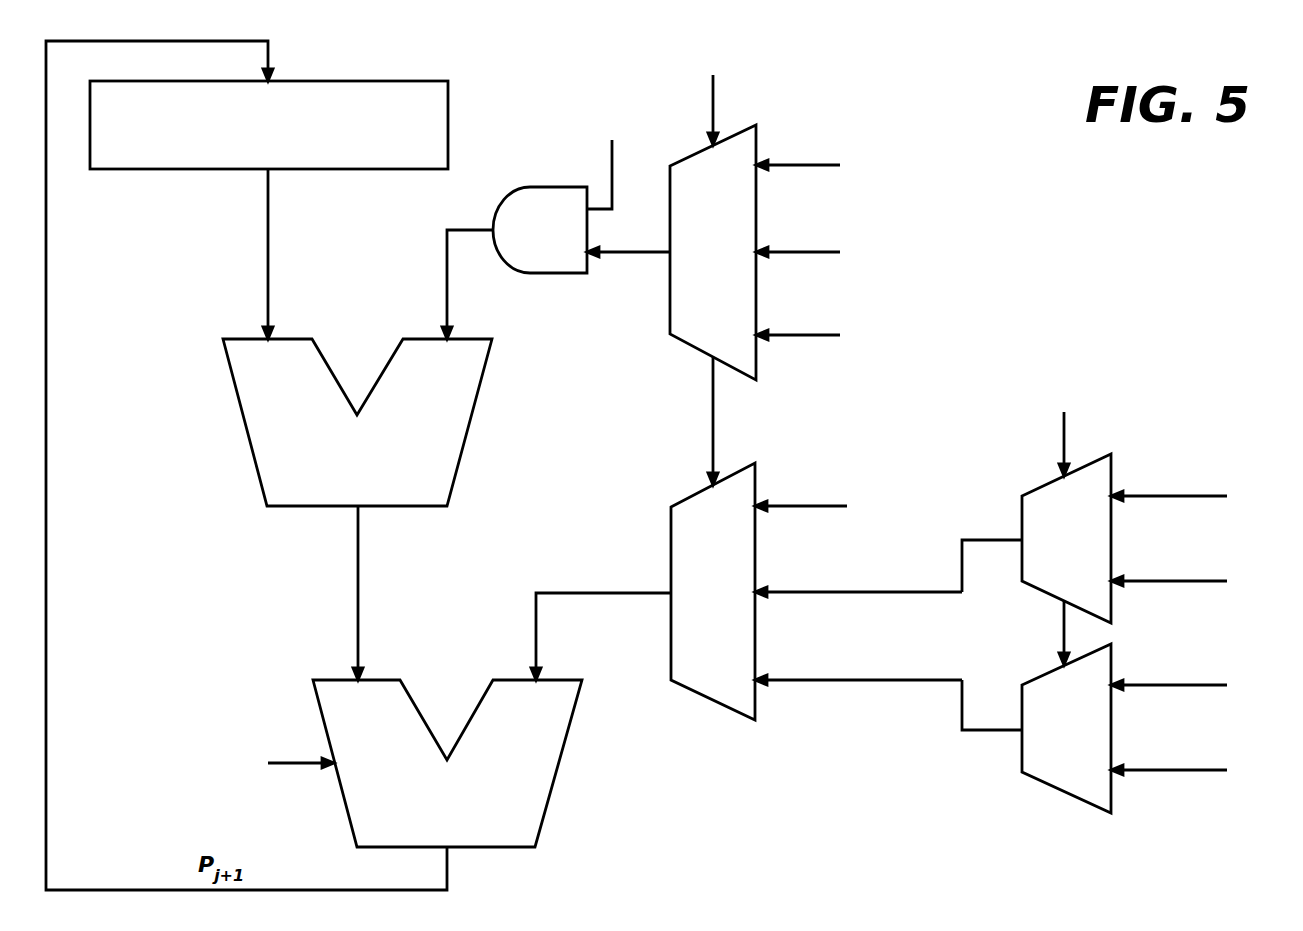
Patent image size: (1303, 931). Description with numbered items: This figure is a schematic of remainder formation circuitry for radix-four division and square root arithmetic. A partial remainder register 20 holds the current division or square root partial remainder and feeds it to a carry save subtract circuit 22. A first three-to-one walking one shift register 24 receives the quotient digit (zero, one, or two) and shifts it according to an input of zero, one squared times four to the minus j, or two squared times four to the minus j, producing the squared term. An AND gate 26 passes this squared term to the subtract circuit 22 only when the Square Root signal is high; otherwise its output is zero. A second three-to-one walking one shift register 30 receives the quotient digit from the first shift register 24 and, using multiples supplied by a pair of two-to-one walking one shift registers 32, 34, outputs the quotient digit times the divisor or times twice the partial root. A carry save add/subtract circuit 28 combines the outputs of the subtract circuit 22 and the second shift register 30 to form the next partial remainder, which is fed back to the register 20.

The partial remainder register 20 is at (347, 81).
The carry save subtract circuit 22 is at (252, 462).
The first three-to-one walking one shift register 24 is at (668, 333).
The AND gate 26 is at (542, 274).
The carry save add/subtract circuit 28 is at (313, 700).
The second three-to-one walking one shift register 30 is at (697, 697).
The two-to-one walking one shift register 32 is at (1039, 482).
The two-to-one walking one shift register 34 is at (1039, 783).